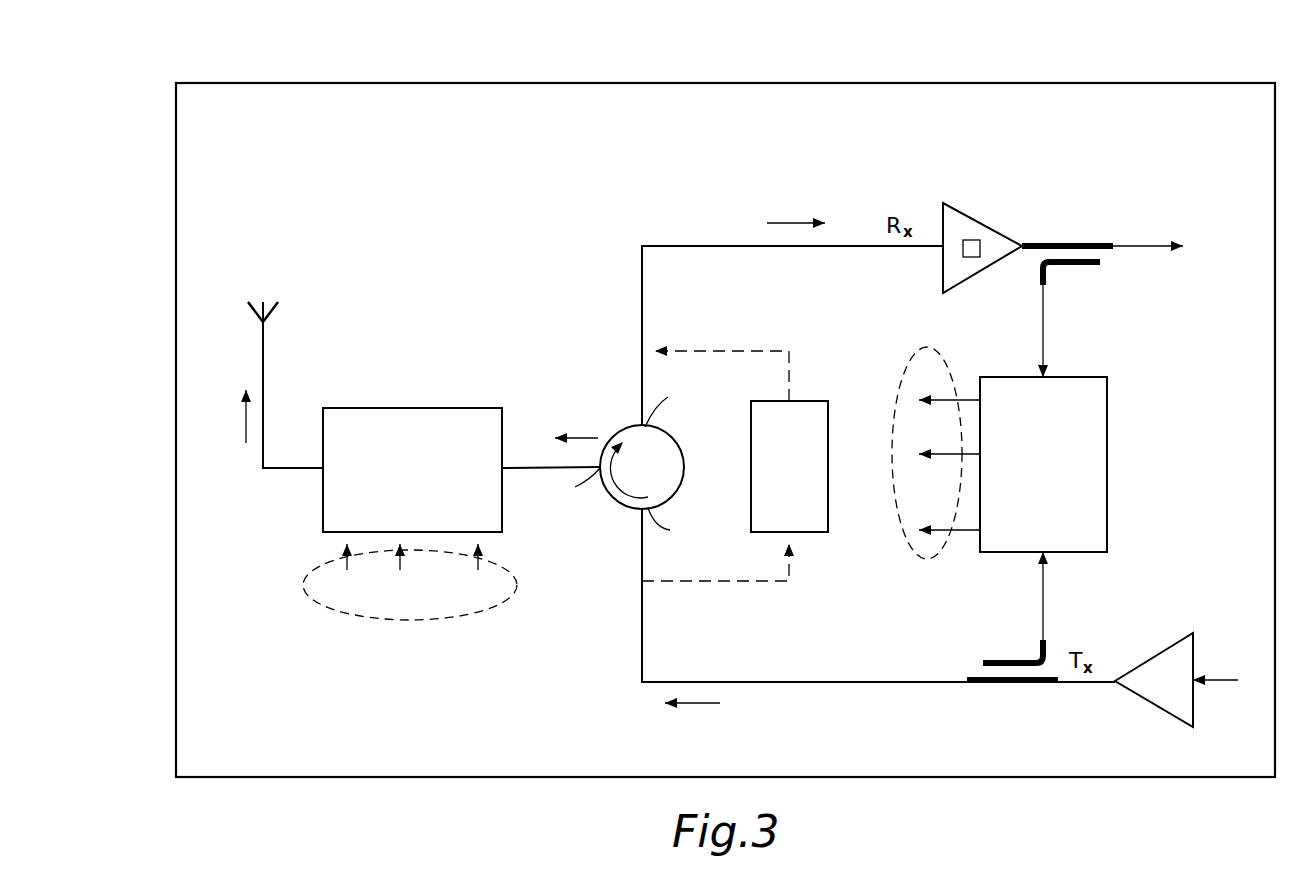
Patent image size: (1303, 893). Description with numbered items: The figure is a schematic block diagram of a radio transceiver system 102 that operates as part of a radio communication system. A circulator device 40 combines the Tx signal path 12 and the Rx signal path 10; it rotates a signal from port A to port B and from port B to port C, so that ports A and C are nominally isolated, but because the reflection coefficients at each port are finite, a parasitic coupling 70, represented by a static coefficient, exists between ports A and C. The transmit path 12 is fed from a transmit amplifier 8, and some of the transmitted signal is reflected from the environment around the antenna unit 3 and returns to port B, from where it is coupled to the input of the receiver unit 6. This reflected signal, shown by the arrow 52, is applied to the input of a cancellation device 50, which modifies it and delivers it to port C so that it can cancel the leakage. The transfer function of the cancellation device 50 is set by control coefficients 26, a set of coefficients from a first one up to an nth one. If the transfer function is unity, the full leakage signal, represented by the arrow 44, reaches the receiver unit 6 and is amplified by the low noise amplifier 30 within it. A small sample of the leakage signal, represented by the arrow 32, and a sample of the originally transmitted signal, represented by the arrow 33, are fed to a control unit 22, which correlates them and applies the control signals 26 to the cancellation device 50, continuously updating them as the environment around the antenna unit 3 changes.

The radio transceiver system 102 is at (627, 83).
The antenna unit 3 is at (260, 308).
The reflected signal arrow 52 is at (246, 408).
The cancellation device 50 is at (420, 408).
The control coefficients 26 is at (516, 583).
The Rx signal path 10 is at (641, 268).
The leakage signal arrow 44 is at (792, 220).
The receiver unit 6 is at (975, 212).
The low noise amplifier 30 is at (968, 258).
The leakage signal sample arrow 32 is at (1045, 303).
The control unit 22 is at (1107, 432).
The transmitted signal sample arrow 33 is at (1045, 612).
The transmit amplifier 8 is at (1155, 699).
The Tx signal path 12 is at (870, 683).
The parasitic coupling 70 is at (735, 466).
The circulator device 40 is at (636, 510).